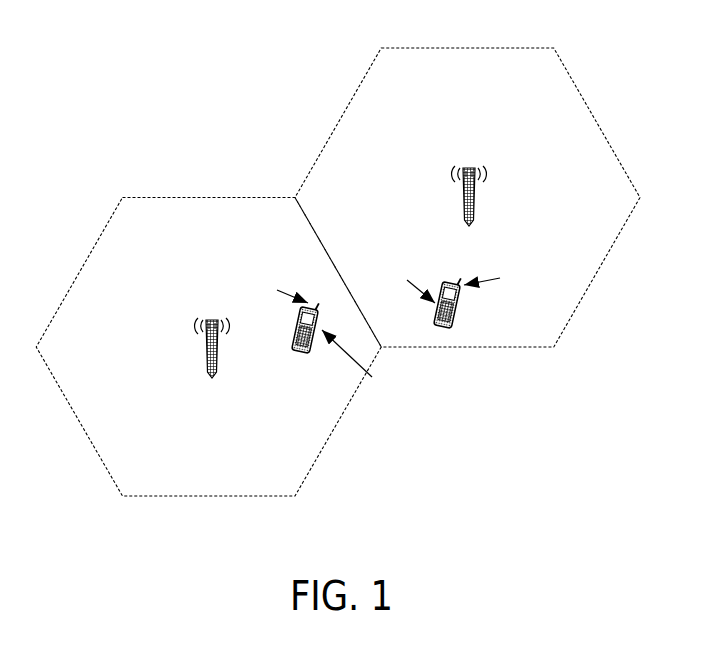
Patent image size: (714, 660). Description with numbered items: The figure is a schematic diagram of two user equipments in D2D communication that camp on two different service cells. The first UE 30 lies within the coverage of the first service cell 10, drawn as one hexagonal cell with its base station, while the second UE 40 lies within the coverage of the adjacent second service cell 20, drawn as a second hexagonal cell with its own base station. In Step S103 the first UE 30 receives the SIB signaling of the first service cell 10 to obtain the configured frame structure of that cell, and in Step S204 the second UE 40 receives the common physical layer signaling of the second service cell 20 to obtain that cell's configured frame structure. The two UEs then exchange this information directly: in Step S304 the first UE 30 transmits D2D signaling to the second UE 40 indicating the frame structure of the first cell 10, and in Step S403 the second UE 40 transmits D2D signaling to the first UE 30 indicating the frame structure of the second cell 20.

The first service cell 10 is at (467, 160).
The second service cell 20 is at (187, 337).
The first UE 30 is at (447, 330).
The second UE 40 is at (305, 355).
The step of receiving SIB signaling of the first service cell S103 is at (476, 198).
The step of receiving common physical layer signaling of the second service cell S204 is at (217, 325).
The step of transmitting D2D signaling from the first UE to the second UE S304 is at (440, 320).
The step of transmitting D2D signaling from the second UE to the first UE S403 is at (320, 328).